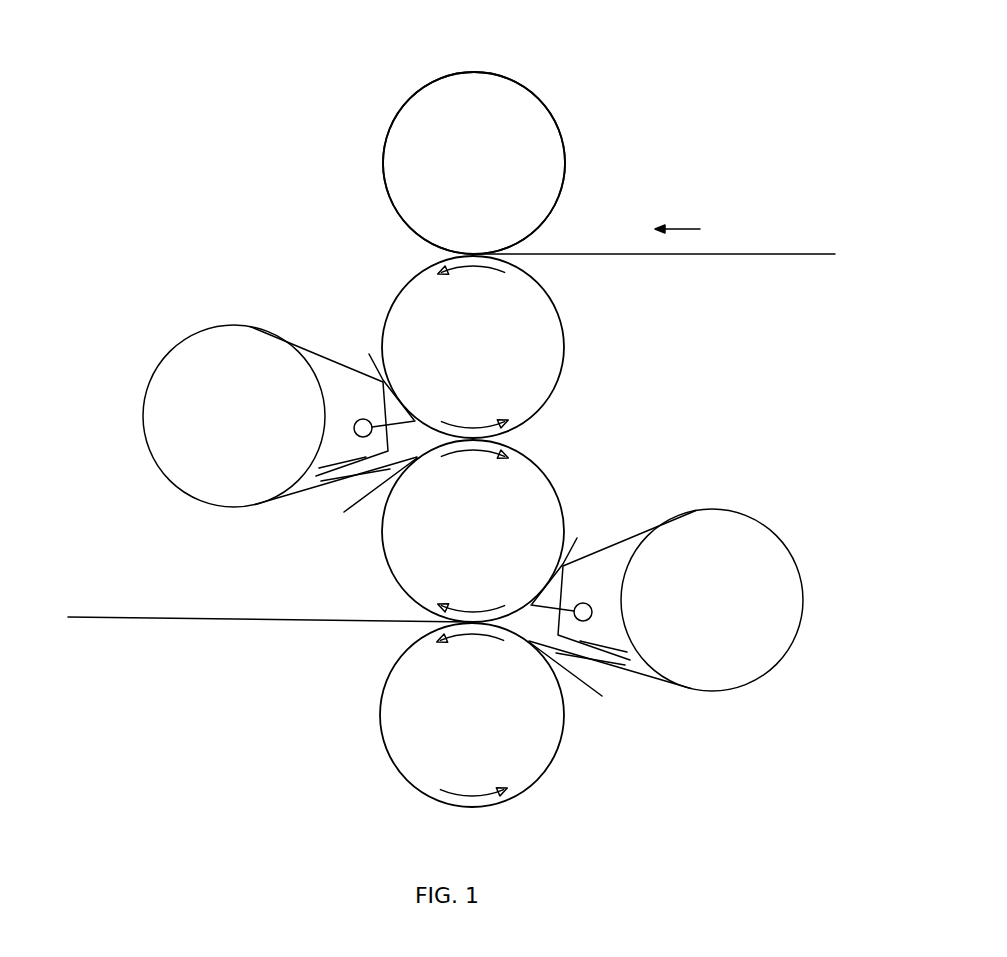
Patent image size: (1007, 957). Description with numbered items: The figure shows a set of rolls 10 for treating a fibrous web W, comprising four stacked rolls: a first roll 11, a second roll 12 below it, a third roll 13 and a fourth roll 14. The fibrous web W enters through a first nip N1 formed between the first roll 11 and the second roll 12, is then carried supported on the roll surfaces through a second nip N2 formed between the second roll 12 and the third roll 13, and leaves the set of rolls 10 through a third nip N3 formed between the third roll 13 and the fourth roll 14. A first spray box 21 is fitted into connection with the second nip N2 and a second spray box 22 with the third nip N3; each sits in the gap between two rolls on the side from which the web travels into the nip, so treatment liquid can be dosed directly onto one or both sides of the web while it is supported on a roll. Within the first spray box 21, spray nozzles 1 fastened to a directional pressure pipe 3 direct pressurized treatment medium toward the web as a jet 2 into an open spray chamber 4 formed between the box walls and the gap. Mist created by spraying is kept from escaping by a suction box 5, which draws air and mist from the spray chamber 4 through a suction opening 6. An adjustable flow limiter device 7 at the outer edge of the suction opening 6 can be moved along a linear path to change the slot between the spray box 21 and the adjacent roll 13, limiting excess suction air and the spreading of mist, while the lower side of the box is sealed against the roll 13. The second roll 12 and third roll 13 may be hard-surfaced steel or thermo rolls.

The set of rolls 10 is at (548, 64).
The first roll 11 is at (552, 158).
The second roll 12 is at (551, 354).
The third roll 13 is at (554, 497).
The fourth roll 14 is at (528, 770).
The fibrous web W is at (722, 256).
The first nip N1 is at (542, 243).
The second nip N2 is at (517, 441).
The third nip N3 is at (378, 603).
The spray nozzles 1 is at (373, 419).
The jet 2 is at (369, 354).
The pressure pipe 3 is at (354, 428).
The spray chamber 4 is at (399, 452).
The suction box 5 is at (213, 432).
The suction opening 6 is at (302, 482).
The flow limiter device 7 is at (344, 512).
The first spray box 21 is at (165, 460).
The second spray box 22 is at (755, 668).